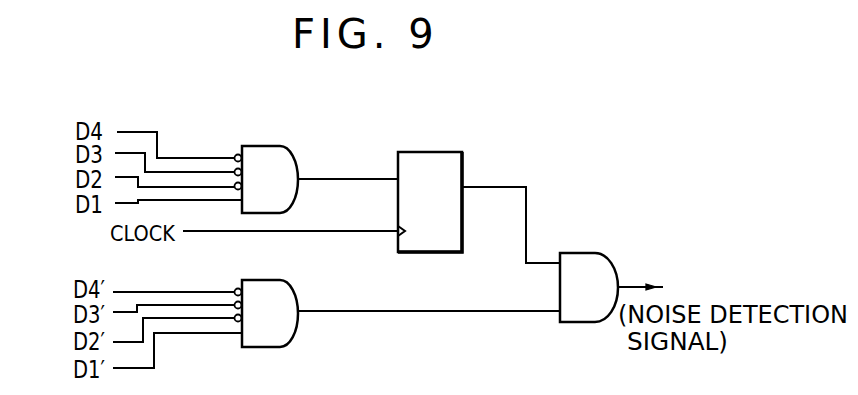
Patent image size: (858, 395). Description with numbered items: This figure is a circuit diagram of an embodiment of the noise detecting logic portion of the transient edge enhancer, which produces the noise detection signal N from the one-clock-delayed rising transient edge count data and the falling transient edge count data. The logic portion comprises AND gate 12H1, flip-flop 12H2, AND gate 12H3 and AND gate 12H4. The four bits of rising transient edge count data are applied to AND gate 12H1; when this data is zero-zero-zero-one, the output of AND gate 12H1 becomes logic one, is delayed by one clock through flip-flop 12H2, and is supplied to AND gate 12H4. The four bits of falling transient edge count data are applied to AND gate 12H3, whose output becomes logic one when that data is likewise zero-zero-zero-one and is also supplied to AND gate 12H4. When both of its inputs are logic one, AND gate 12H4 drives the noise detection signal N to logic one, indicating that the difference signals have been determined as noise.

The AND gate 12H1 is at (267, 146).
The flip-flop 12H2 is at (423, 152).
The AND gate 12H3 is at (280, 280).
The AND gate 12H4 is at (580, 253).
The noise detection signal N is at (655, 286).